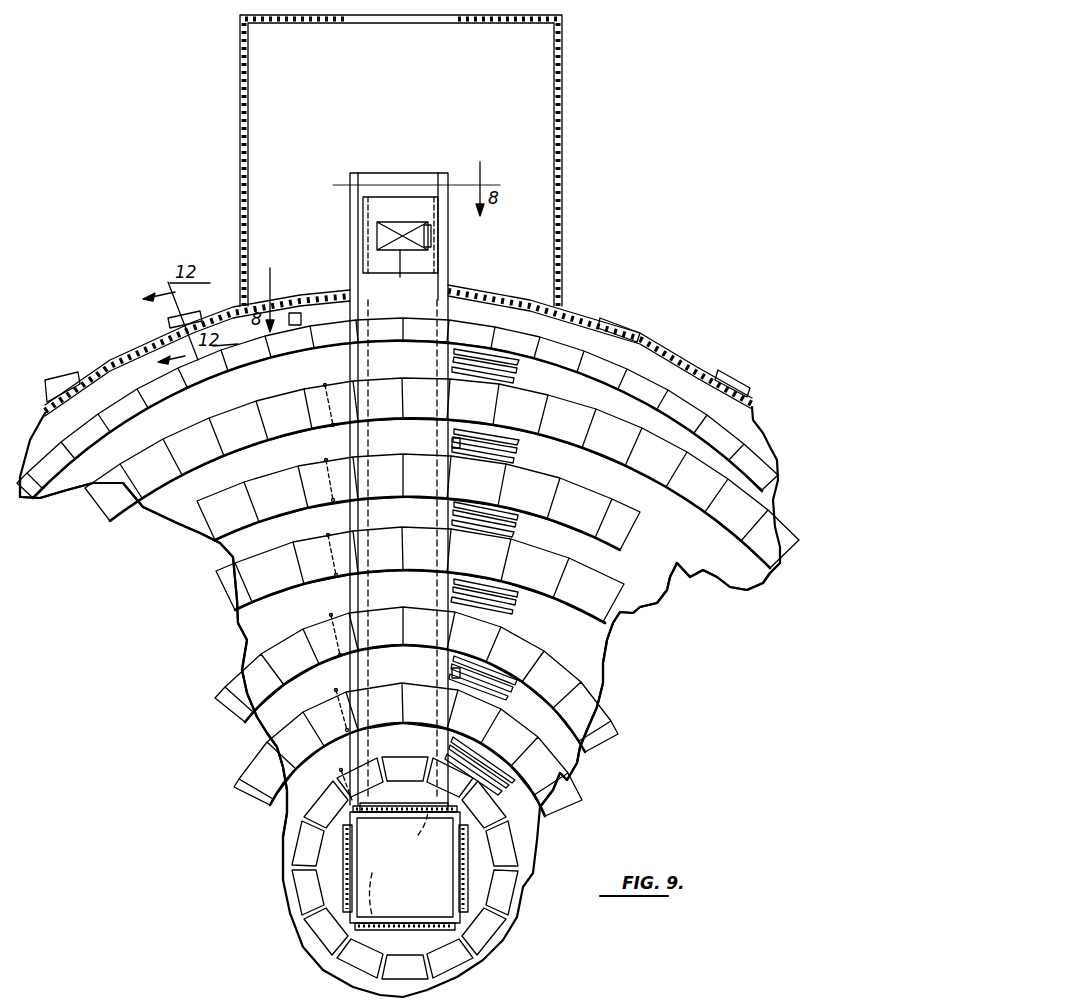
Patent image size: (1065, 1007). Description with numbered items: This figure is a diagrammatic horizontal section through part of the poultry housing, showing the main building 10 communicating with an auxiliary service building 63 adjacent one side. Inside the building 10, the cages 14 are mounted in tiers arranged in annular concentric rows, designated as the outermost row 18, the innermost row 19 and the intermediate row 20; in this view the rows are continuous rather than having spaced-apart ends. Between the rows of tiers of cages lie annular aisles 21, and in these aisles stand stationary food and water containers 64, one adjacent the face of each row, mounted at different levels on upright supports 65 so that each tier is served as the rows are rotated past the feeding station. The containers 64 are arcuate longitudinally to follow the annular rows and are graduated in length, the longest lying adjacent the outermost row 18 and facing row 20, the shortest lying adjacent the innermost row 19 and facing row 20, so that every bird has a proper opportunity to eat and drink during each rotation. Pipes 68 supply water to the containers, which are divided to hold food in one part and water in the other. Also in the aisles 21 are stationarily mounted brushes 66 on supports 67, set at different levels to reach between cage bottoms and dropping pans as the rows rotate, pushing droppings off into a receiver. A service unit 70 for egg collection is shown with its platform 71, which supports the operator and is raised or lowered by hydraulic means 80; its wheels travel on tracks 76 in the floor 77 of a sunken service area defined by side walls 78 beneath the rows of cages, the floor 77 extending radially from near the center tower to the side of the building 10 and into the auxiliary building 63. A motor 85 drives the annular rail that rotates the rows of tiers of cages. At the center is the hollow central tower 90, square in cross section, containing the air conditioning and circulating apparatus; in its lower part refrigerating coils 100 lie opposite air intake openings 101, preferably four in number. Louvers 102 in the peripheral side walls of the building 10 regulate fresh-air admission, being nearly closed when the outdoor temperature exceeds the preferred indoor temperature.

The building 10 is at (680, 346).
The cages 14 is at (205, 376).
The outermost annular row of tiers of cages 18 is at (125, 420).
The innermost annular row of tiers of cages 19 is at (513, 930).
The annular row of tiers of cages 20 is at (100, 500).
The annular aisles 21 is at (68, 502).
The auxiliary service building 63 is at (562, 88).
The food and water containers 64 is at (486, 353).
The upright supports 65 is at (450, 360).
The brushes 66 is at (322, 372).
The supports 67 is at (318, 380).
The pipes 68 is at (455, 444).
The service unit 70 is at (438, 248).
The platform 71 is at (400, 273).
The tracks 76 is at (380, 176).
The floor 77 is at (395, 180).
The side walls 78 is at (370, 445).
The hydraulic means 80 is at (402, 226).
The motor 85 is at (296, 312).
The central tower 90 is at (345, 920).
The refrigerating coils 100 is at (360, 882).
The air intake openings 101 is at (410, 816).
The louvers 102 is at (180, 330).